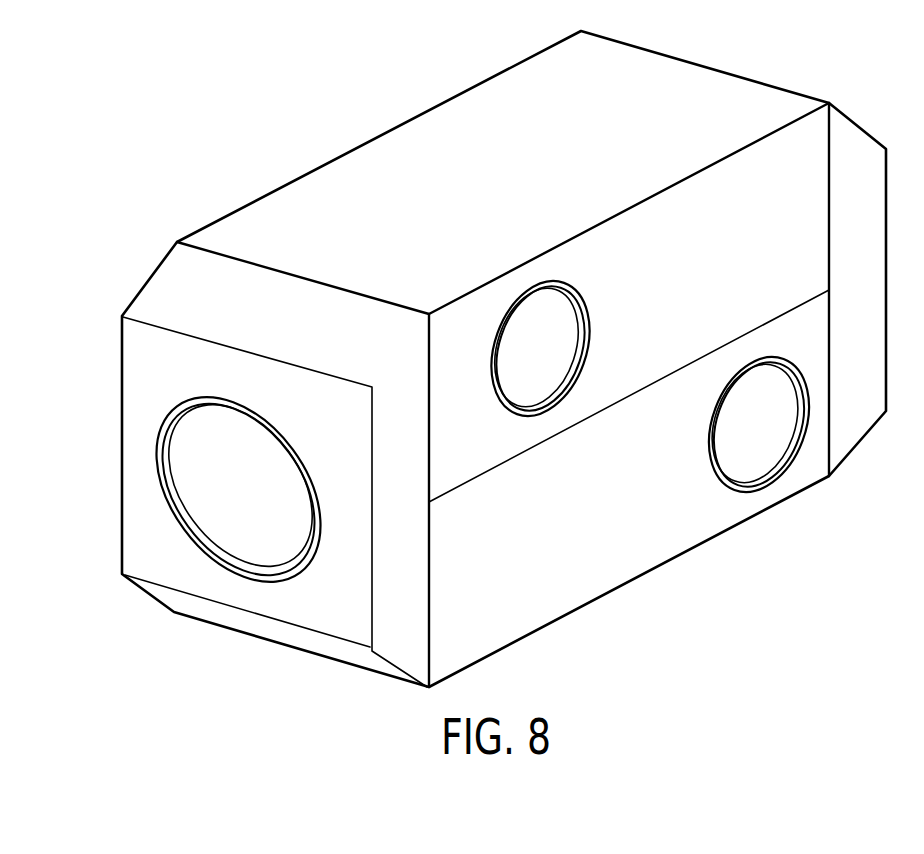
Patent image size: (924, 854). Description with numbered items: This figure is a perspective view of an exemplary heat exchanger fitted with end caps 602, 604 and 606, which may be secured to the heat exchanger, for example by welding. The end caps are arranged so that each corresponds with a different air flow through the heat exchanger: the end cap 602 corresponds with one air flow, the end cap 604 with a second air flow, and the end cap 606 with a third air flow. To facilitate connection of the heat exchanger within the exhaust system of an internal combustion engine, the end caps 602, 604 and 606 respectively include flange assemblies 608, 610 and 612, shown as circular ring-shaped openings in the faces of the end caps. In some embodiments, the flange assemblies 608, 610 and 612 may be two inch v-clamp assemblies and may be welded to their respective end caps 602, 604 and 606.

The end cap 602 is at (169, 287).
The end cap 604 is at (676, 206).
The end cap 606 is at (646, 553).
The flange assembly 608 is at (201, 537).
The flange assembly 610 is at (587, 313).
The flange assembly 612 is at (715, 457).